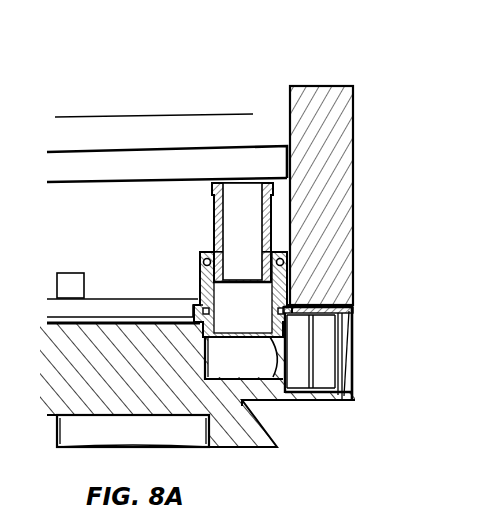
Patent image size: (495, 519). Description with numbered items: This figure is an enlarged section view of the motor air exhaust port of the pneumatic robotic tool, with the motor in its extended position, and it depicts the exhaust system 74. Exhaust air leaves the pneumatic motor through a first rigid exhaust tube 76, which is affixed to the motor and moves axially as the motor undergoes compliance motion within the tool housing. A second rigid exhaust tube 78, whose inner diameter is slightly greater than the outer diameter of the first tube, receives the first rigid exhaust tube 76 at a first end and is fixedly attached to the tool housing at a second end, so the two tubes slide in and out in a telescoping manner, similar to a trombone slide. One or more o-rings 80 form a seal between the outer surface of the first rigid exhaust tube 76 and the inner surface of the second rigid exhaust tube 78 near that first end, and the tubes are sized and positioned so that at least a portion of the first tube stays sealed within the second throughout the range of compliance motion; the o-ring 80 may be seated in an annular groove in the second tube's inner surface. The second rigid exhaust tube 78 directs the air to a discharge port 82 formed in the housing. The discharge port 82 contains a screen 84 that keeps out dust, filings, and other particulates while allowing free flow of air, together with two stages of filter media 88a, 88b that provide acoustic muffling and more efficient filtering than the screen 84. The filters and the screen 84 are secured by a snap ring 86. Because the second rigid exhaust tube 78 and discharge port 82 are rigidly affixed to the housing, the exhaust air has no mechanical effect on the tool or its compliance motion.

The exhaust system 74 is at (386, 62).
The first rigid exhaust tube 76 is at (268, 217).
The second rigid exhaust tube 78 is at (291, 289).
The o-ring 80 is at (283, 264).
The discharge port 82 is at (362, 358).
The screen 84 is at (341, 400).
The snap ring 86 is at (350, 328).
The filter media 88a is at (297, 372).
The filter media 88b is at (323, 370).